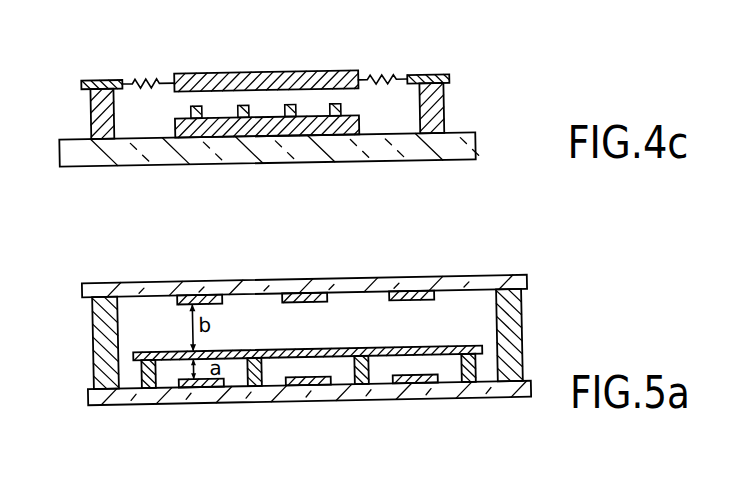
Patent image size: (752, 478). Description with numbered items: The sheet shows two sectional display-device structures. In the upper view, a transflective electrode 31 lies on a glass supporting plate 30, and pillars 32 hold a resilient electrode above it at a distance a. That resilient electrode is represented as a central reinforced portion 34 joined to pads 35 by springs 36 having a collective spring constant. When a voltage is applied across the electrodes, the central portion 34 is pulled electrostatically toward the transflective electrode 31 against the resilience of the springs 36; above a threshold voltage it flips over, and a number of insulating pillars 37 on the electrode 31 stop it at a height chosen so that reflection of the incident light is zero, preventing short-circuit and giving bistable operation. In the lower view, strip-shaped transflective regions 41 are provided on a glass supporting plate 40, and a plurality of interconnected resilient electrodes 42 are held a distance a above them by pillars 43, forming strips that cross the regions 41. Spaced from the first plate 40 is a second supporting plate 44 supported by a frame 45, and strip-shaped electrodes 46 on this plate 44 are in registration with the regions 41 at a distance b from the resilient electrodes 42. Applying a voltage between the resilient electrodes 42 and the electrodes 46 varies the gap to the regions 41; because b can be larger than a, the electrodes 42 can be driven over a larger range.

In FIG. 4c, the glass supporting plate 30 is at (385, 157).
In FIG. 4c, the transflective electrode 31 is at (270, 147).
In FIG. 4c, the pillars 32 is at (92, 108).
In FIG. 4c, the central reinforced portion 34 is at (262, 73).
In FIG. 4c, the pads 35 is at (100, 77).
In FIG. 4c, the springs 36 is at (149, 87).
In FIG. 4c, the insulating pillars 37 is at (244, 104).
In FIG. 5a, the glass supporting plate 40 is at (512, 398).
In FIG. 5a, the strip-shaped transflective regions 41 is at (197, 386).
In FIG. 5a, the resilient electrodes 42 is at (165, 349).
In FIG. 5a, the pillars 43 is at (147, 386).
In FIG. 5a, the second supporting plate 44 is at (122, 285).
In FIG. 5a, the frame 45 is at (100, 344).
In FIG. 5a, the strip-shaped electrodes 46 is at (215, 303).